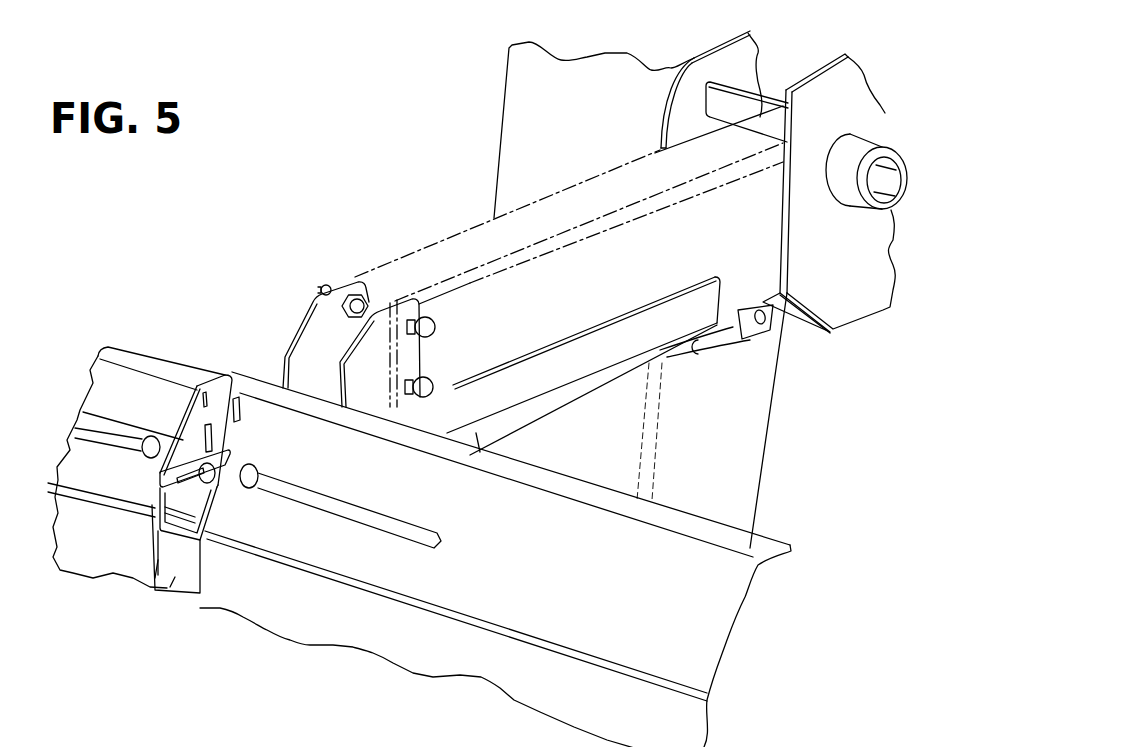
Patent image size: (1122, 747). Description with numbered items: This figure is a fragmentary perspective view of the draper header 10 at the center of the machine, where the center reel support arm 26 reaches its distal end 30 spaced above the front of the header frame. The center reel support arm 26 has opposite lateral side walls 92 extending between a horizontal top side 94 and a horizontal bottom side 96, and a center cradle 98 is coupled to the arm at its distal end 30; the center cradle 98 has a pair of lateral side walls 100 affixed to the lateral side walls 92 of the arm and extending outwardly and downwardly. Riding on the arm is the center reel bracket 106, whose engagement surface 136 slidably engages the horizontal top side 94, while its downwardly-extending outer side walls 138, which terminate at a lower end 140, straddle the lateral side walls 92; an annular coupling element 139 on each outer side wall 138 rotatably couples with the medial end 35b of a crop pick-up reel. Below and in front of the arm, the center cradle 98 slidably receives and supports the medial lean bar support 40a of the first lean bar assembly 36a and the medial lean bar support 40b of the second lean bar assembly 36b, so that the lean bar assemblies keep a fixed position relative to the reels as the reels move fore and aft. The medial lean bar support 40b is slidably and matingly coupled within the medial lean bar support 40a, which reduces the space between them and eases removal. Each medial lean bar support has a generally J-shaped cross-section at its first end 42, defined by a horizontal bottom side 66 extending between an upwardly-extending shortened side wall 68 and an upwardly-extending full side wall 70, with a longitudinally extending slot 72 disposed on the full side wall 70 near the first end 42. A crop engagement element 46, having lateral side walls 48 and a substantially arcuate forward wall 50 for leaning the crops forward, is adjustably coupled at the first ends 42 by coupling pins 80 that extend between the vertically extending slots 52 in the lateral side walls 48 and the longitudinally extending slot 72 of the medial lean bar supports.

The draper header 10 is at (292, 134).
The center reel support arm 26 is at (416, 217).
The distal end 30 is at (398, 305).
The medial end 35b is at (582, 100).
The first lean bar assembly 36a is at (124, 332).
The second lean bar assembly 36b is at (277, 669).
The medial lean bar support 40a is at (145, 497).
The medial lean bar support 40b is at (226, 517).
The first end 42 is at (192, 592).
The crop engagement element 46 is at (453, 687).
The lateral side walls 48 is at (237, 394).
The arcuate forward wall 50 is at (511, 559).
The vertically extending slots 52 is at (205, 463).
The horizontal bottom side 66 is at (170, 587).
The shortened side wall 68 is at (155, 580).
The full side wall 70 is at (225, 509).
The longitudinally extending slot 72 is at (160, 482).
The coupling pins 80 is at (170, 468).
The lateral side walls 92 is at (586, 333).
The horizontal top side 94 is at (482, 235).
The horizontal bottom side 96 is at (736, 262).
The center cradle 98 is at (294, 303).
The lateral side walls 100 is at (381, 357).
The center reel bracket 106 is at (689, 46).
The engagement surface 136 is at (763, 116).
The outer side walls 138 is at (866, 52).
The annular coupling element 139 is at (890, 138).
The lower end 140 is at (827, 302).